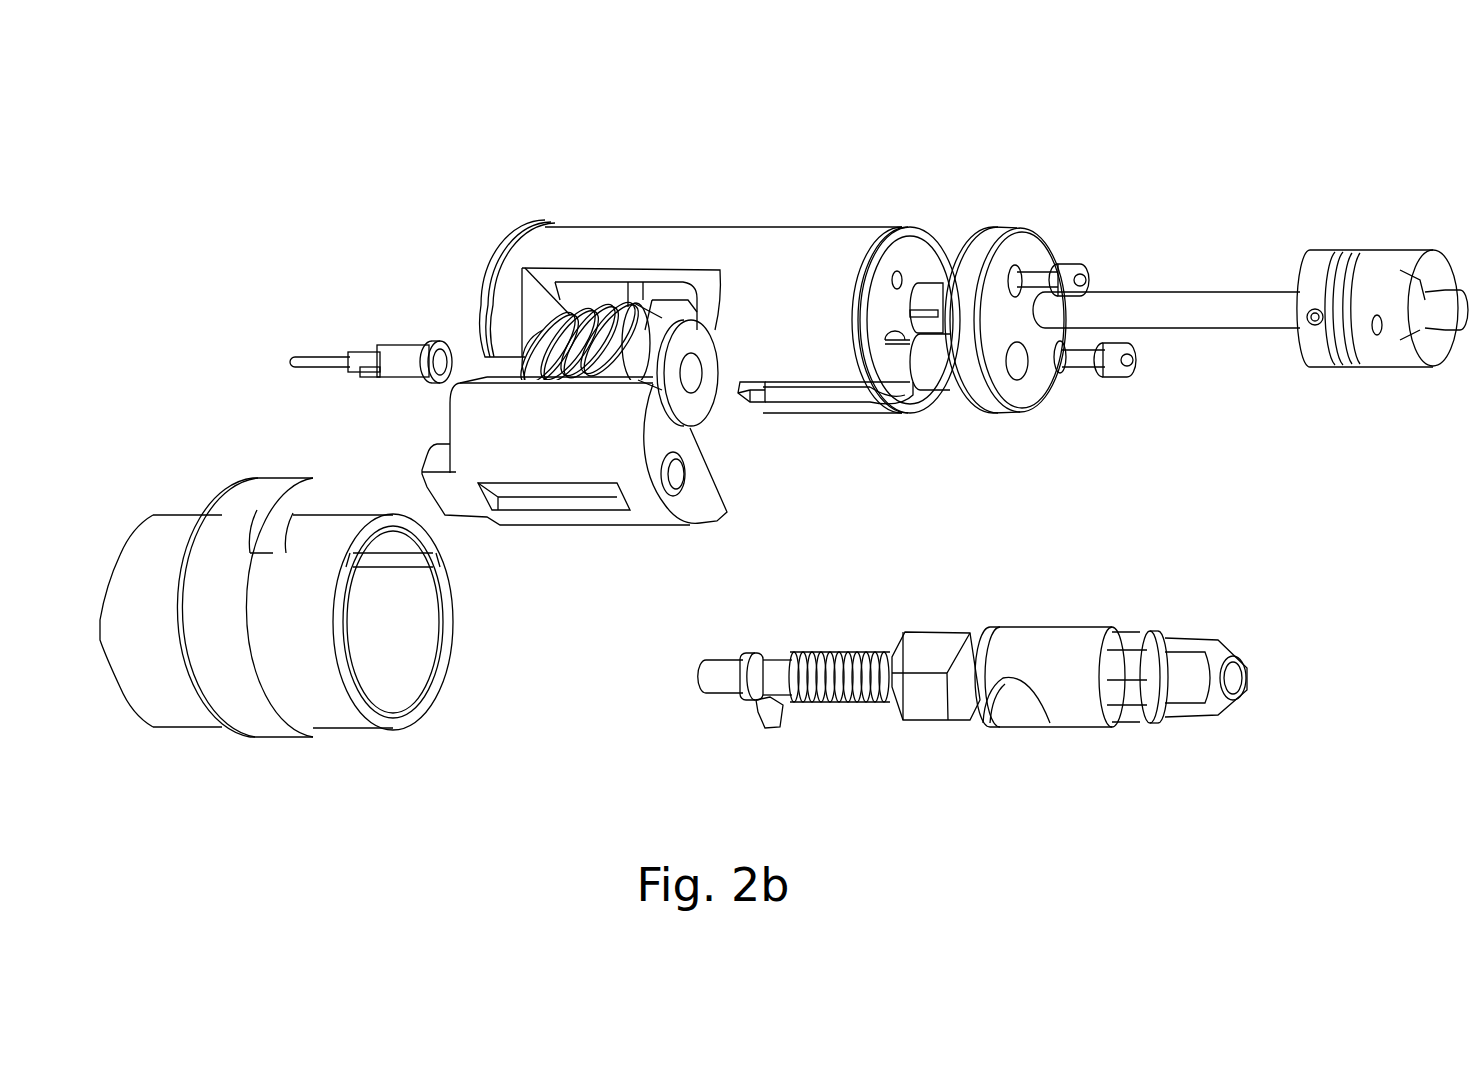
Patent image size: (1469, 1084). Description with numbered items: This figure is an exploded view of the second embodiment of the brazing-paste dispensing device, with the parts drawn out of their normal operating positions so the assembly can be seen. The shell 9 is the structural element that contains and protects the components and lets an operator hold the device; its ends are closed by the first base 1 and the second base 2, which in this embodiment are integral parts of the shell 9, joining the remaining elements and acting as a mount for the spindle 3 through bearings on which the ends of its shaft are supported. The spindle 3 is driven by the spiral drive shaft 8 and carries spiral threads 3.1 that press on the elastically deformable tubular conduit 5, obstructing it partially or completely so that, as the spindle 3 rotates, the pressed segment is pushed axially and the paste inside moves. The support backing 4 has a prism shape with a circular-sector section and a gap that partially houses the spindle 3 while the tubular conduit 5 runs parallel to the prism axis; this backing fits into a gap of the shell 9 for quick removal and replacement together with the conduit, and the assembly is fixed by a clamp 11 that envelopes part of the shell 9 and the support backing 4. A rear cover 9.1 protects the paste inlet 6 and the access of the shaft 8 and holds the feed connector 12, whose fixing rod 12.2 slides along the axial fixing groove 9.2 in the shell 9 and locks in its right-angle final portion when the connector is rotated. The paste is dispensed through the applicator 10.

The first base 1 is at (910, 387).
The second base 2 is at (487, 275).
The spindle 3 is at (657, 337).
The threads 3.1 is at (610, 307).
The support backing 4 is at (506, 437).
The tubular conduit 5 is at (727, 512).
The inlet 6 is at (1013, 367).
The drive shaft 8 is at (1235, 308).
The shell 9 is at (810, 250).
The rear cover 9.1 is at (1040, 262).
The fixing groove 9.2 is at (767, 403).
The applicator 10 is at (323, 358).
The clamp 11 is at (243, 710).
The feed connector 12 is at (1070, 700).
The fixing rod 12.2 is at (768, 728).